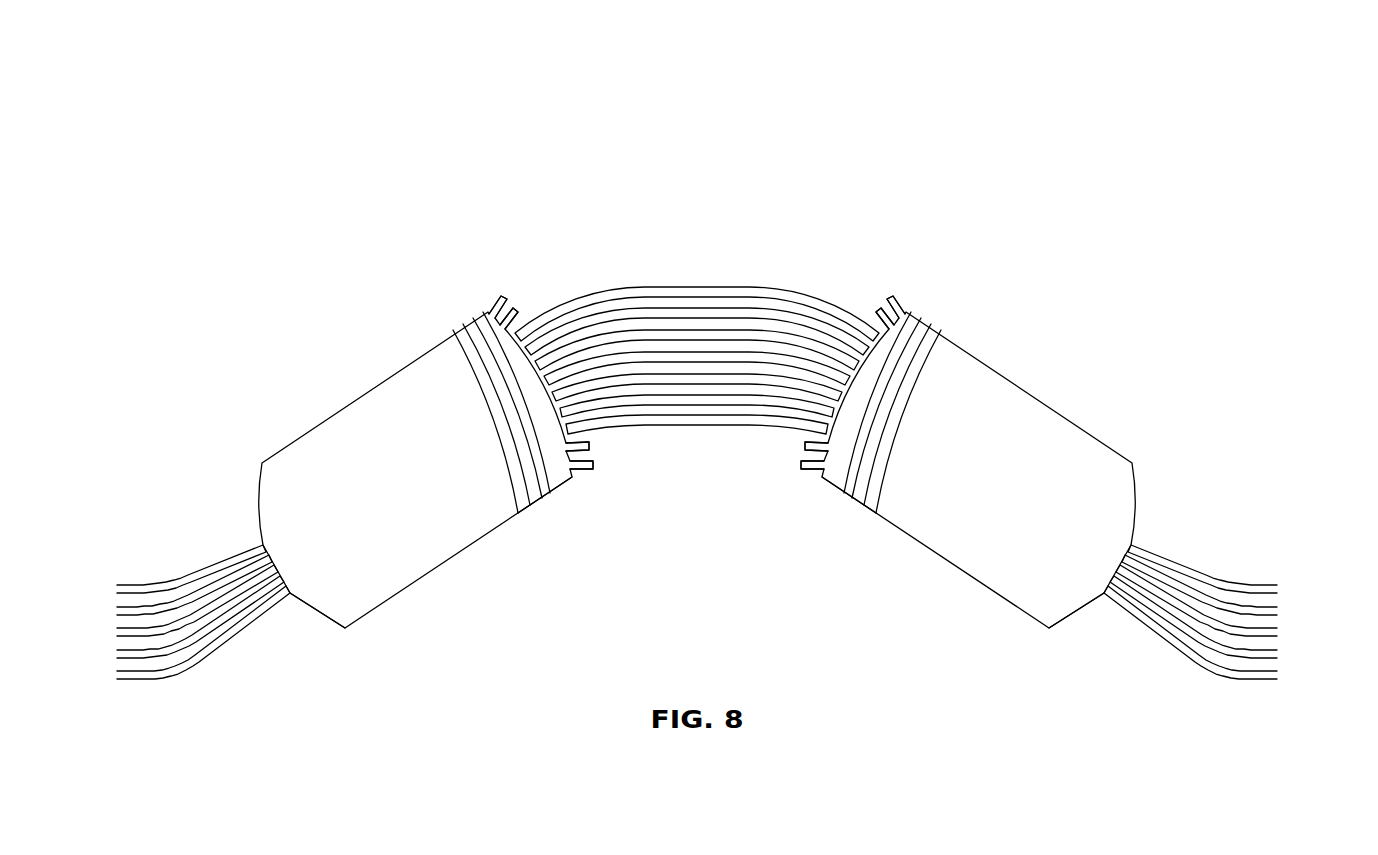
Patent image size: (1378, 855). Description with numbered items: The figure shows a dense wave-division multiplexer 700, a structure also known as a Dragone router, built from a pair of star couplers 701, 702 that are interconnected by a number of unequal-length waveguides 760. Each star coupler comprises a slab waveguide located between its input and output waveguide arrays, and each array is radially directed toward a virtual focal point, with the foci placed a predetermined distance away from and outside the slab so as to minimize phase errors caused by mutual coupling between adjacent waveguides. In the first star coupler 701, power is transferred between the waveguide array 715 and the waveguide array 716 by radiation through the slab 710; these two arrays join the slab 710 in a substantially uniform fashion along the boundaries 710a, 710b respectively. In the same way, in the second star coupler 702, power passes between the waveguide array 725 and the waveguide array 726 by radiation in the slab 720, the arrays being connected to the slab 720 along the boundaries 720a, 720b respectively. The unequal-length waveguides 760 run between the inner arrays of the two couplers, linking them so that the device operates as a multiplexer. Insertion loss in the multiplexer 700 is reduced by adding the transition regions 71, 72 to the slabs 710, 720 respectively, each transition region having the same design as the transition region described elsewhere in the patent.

The dense wave-division multiplexer 700 is at (159, 256).
The star coupler 701 is at (329, 394).
The star coupler 702 is at (1065, 394).
The slab waveguide 710 is at (365, 507).
The slab waveguide 720 is at (990, 507).
The transition region 71 is at (417, 355).
The transition region 72 is at (911, 402).
The boundary 710a is at (313, 622).
The boundary 710b is at (562, 483).
The boundary 720a is at (832, 483).
The boundary 720b is at (1081, 622).
The waveguide array 715 is at (110, 577).
The waveguide array 725 is at (1229, 621).
The waveguide array 716 is at (609, 467).
The waveguide array 726 is at (785, 467).
The unequal-length waveguides 760 is at (763, 432).